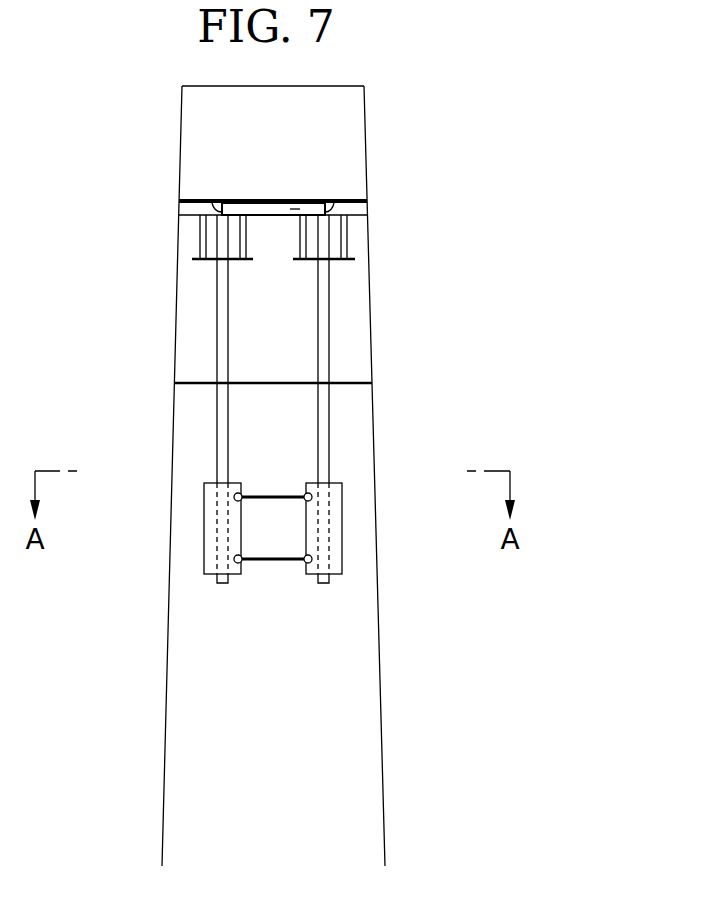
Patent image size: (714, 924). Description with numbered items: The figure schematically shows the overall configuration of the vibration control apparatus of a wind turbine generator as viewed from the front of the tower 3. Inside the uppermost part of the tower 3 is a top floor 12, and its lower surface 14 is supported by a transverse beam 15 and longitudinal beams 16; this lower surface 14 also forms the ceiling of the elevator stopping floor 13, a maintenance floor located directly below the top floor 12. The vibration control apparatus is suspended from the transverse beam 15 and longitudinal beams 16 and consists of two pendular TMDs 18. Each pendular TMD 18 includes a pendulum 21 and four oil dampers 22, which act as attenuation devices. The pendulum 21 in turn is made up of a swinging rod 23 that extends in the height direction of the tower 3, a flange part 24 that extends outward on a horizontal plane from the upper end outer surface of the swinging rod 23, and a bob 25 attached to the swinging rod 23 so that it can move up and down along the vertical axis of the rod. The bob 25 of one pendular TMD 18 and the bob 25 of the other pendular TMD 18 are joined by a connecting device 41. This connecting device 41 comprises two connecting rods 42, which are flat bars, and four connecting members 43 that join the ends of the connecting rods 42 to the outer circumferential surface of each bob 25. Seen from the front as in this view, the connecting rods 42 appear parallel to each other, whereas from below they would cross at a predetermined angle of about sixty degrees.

The tower 3 is at (365, 135).
The top floor 12 is at (250, 202).
The elevator stopping floor 13 is at (357, 385).
The lower surface 14 is at (367, 208).
The transverse beam 15 is at (295, 206).
The longitudinal beam 16 is at (218, 200).
The pendular TMD 18 is at (190, 345).
The pendulum 21 is at (195, 585).
The oil damper 22 is at (198, 237).
The swinging rod 23 is at (217, 408).
The flange part 24 is at (233, 261).
The bob 25 is at (212, 527).
The connecting device 41 is at (252, 603).
The connecting rod 42 is at (272, 496).
The connecting member 43 is at (207, 488).